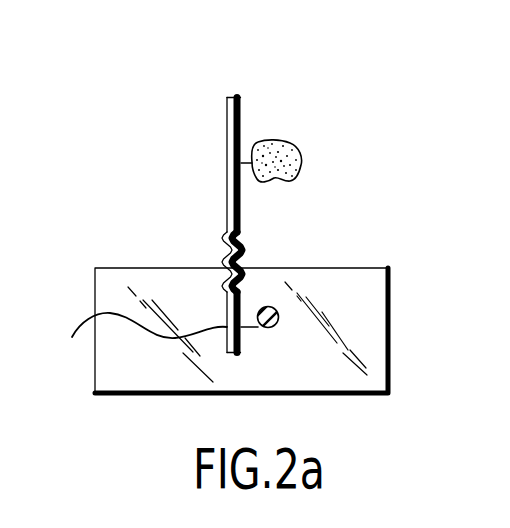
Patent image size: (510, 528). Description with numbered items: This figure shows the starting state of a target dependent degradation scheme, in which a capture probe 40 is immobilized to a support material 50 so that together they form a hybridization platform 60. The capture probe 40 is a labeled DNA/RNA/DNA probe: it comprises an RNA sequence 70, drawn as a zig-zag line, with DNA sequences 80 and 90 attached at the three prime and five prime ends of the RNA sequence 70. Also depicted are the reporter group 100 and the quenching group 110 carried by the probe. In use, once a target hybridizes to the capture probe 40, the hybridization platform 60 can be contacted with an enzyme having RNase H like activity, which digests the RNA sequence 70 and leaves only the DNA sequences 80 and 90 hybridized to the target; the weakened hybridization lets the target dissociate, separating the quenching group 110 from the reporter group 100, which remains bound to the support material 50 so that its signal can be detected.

The capture probe 40 is at (192, 204).
The support material 50 is at (125, 380).
The hybridization platform 60 is at (395, 88).
The RNA sequence 70 is at (240, 250).
The DNA sequence 80 is at (131, 347).
The DNA sequence 90 is at (227, 160).
The reporter group 100 is at (278, 308).
The quenching group 110 is at (286, 141).